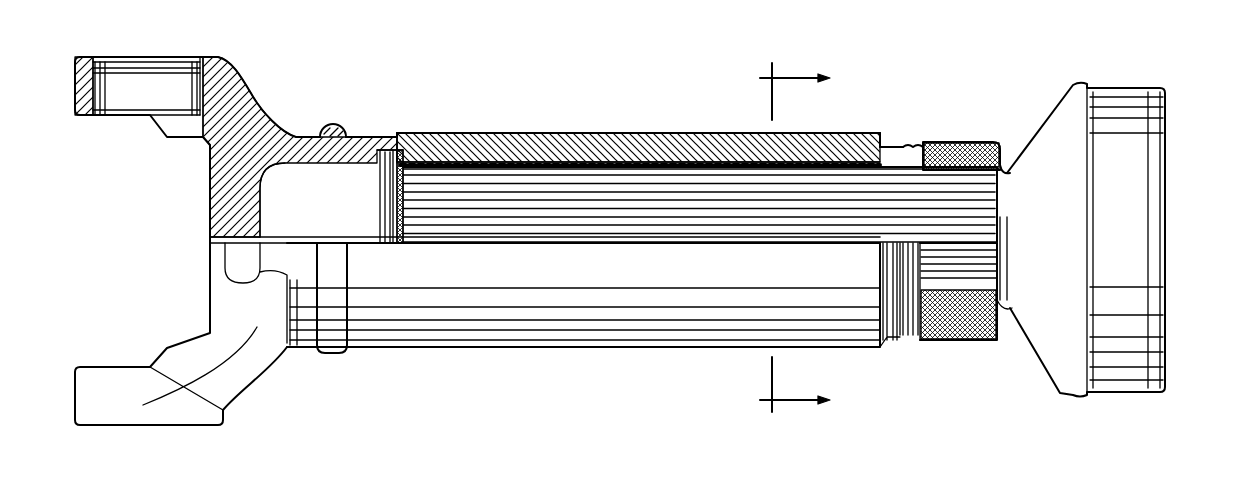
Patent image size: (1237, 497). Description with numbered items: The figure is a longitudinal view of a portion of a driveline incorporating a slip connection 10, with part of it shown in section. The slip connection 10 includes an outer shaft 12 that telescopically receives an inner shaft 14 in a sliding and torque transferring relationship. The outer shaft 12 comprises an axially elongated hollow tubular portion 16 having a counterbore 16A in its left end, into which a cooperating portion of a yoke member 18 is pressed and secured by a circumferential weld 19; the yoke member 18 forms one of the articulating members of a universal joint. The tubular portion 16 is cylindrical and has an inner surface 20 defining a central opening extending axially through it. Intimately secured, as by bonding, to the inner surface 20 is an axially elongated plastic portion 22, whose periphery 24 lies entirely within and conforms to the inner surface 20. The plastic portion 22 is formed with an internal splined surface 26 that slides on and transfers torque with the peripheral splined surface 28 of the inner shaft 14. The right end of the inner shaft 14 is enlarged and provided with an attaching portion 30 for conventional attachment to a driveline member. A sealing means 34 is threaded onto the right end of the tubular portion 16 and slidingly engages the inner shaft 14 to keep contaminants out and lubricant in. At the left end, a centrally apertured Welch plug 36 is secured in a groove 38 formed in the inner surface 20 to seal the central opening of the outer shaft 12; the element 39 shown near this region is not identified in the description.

The slip connection 10 is at (703, 112).
The outer shaft 12 is at (599, 133).
The inner shaft 14 is at (725, 206).
The tubular portion 16 is at (840, 143).
The counterbore 16A is at (364, 150).
The yoke member 18 is at (245, 98).
The circumferential weld 19 is at (332, 128).
The inner surface 20 is at (432, 160).
The plastic portion 22 is at (777, 163).
The periphery 24 is at (663, 152).
The internal splined surface 26 is at (698, 176).
The splined surface 28 is at (653, 222).
The attaching portion 30 is at (1109, 84).
The sealing means 34 is at (970, 144).
The Welch plug 36 is at (402, 220).
The groove 38 is at (393, 178).
The gasket 39 is at (377, 173).